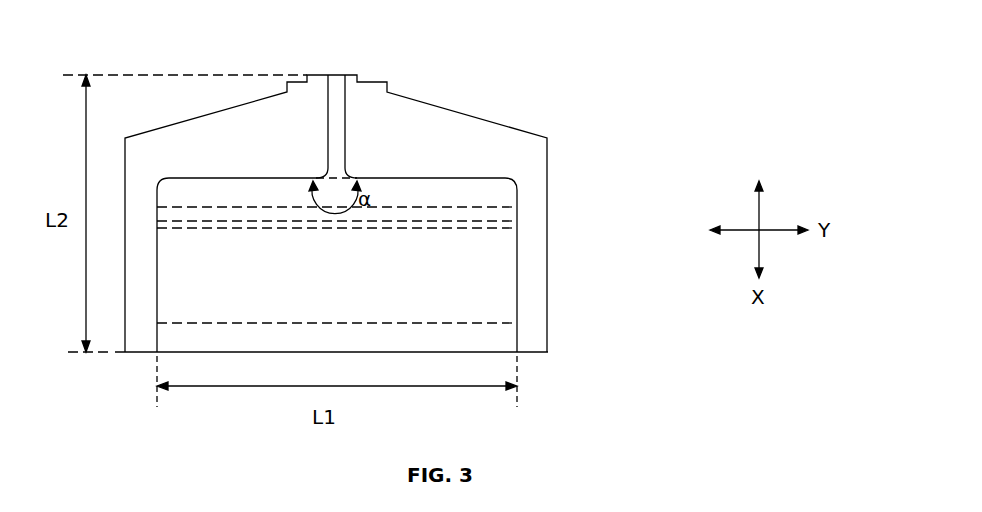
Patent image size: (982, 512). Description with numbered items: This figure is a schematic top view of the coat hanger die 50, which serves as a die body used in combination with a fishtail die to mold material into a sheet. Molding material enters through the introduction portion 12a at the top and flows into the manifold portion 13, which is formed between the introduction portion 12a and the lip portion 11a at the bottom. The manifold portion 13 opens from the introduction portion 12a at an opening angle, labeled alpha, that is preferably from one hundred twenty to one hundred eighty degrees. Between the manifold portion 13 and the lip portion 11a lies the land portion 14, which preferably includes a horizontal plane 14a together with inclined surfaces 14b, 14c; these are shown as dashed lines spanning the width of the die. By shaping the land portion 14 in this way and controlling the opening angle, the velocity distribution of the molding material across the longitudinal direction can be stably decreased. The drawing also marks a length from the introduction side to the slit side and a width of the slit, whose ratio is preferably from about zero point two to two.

The coat hanger die 50 is at (557, 111).
The introduction portion 12a is at (340, 120).
The manifold portion 13 is at (502, 194).
The land portion 14 is at (413, 258).
The horizontal plane 14a is at (508, 220).
The inclined surface 14c is at (508, 227).
The inclined surface 14b is at (389, 296).
The lip portion 11a is at (498, 337).